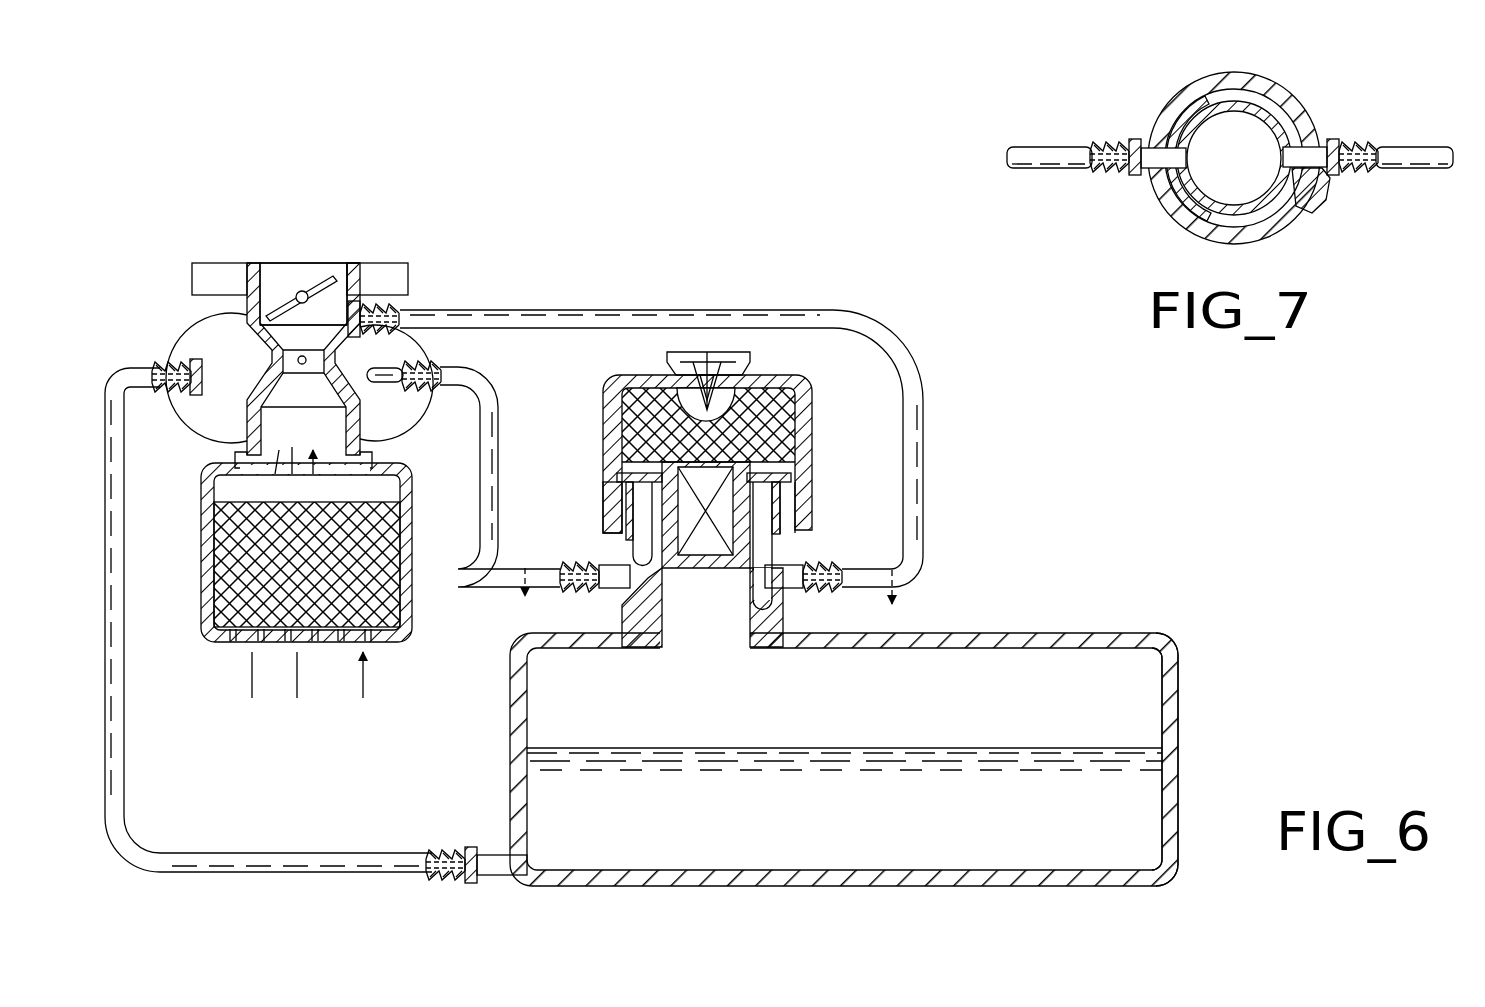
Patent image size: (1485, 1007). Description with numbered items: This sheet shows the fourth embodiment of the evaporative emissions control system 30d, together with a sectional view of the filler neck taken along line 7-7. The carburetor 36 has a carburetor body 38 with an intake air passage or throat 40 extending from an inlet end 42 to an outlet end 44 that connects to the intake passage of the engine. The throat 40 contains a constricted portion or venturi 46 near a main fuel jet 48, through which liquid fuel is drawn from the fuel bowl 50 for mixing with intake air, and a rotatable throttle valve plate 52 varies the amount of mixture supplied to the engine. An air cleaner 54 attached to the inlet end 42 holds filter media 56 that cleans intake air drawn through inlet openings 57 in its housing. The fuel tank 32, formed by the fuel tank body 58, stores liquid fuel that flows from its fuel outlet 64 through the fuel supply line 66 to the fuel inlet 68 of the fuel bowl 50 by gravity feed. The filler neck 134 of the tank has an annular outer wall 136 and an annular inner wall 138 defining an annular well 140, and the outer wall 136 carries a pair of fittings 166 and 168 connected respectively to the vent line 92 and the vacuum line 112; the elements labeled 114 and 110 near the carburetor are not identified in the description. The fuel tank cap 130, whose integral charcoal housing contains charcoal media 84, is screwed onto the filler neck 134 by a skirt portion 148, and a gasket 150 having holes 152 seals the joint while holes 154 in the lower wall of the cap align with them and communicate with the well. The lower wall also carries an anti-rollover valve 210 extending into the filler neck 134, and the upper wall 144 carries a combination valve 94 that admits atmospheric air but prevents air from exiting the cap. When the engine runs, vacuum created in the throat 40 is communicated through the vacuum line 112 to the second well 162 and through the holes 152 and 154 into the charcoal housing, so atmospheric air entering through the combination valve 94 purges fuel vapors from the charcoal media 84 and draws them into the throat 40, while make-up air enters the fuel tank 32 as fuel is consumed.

In FIG. 6, the evaporative emissions control system 30d is at (562, 260).
In FIG. 6, the fuel tank 32 is at (1160, 608).
In FIG. 6, the fuel tank body 58 is at (1180, 700).
In FIG. 6, the carburetor 36 is at (283, 331).
In FIG. 6, the carburetor body 38 is at (215, 262).
In FIG. 6, the intake air passage or throat 40 is at (266, 262).
In FIG. 6, the outlet end 44 is at (317, 258).
In FIG. 6, the throttle valve plate 52 is at (326, 276).
In FIG. 6, the venturi 46 is at (283, 364).
In FIG. 6, the main fuel jet 48 is at (299, 366).
In FIG. 6, the fuel bowl 50 is at (244, 371).
In FIG. 6, the hose fitting 114 is at (404, 312).
In FIG. 6, the hose fitting 110 is at (433, 370).
In FIG. 6, the fuel inlet 68 is at (185, 360).
In FIG. 6, the fuel outlet 64 is at (478, 842).
In FIG. 6, the inlet end 42 is at (270, 470).
In FIG. 6, the air cleaner 54 is at (206, 531).
In FIG. 6, the filter media 56 is at (228, 566).
In FIG. 6, the inlet openings 57 is at (233, 643).
In FIG. 6, the fuel supply line 66 is at (287, 853).
In FIG. 6, the vent line 92 is at (497, 425).
In FIG. 7, the vent line 92 is at (1023, 152).
In FIG. 6, the vacuum line 112 is at (685, 310).
In FIG. 7, the vacuum line 112 is at (1427, 152).
In FIG. 6, the fuel tank cap 130 is at (699, 450).
In FIG. 6, the upper wall 144 is at (648, 376).
In FIG. 6, the charcoal media 84 is at (786, 384).
In FIG. 6, the combination valve 94 is at (712, 372).
In FIG. 6, the holes 154 is at (638, 458).
In FIG. 6, the holes 152 is at (624, 492).
In FIG. 6, the skirt portion 148 is at (603, 514).
In FIG. 6, the gasket 150 is at (812, 477).
In FIG. 6, the annular outer wall 136 is at (790, 536).
In FIG. 7, the annular outer wall 136 is at (1178, 93).
In FIG. 6, the anti-rollover valve 210 is at (702, 558).
In FIG. 6, the annular inner wall 138 is at (755, 565).
In FIG. 7, the annular inner wall 138 is at (1210, 107).
In FIG. 6, the filler neck 134 is at (743, 623).
In FIG. 7, the filler neck 134 is at (1295, 70).
In FIG. 6, the second well 162 is at (748, 602).
In FIG. 6, the fitting 166 is at (572, 566).
In FIG. 7, the fitting 166 is at (1108, 143).
In FIG. 6, the fitting 168 is at (832, 564).
In FIG. 7, the fitting 168 is at (1362, 143).
In FIG. 7, the annular well 140 is at (1296, 198).
In FIG. 6, the section line 7 is at (711, 601).